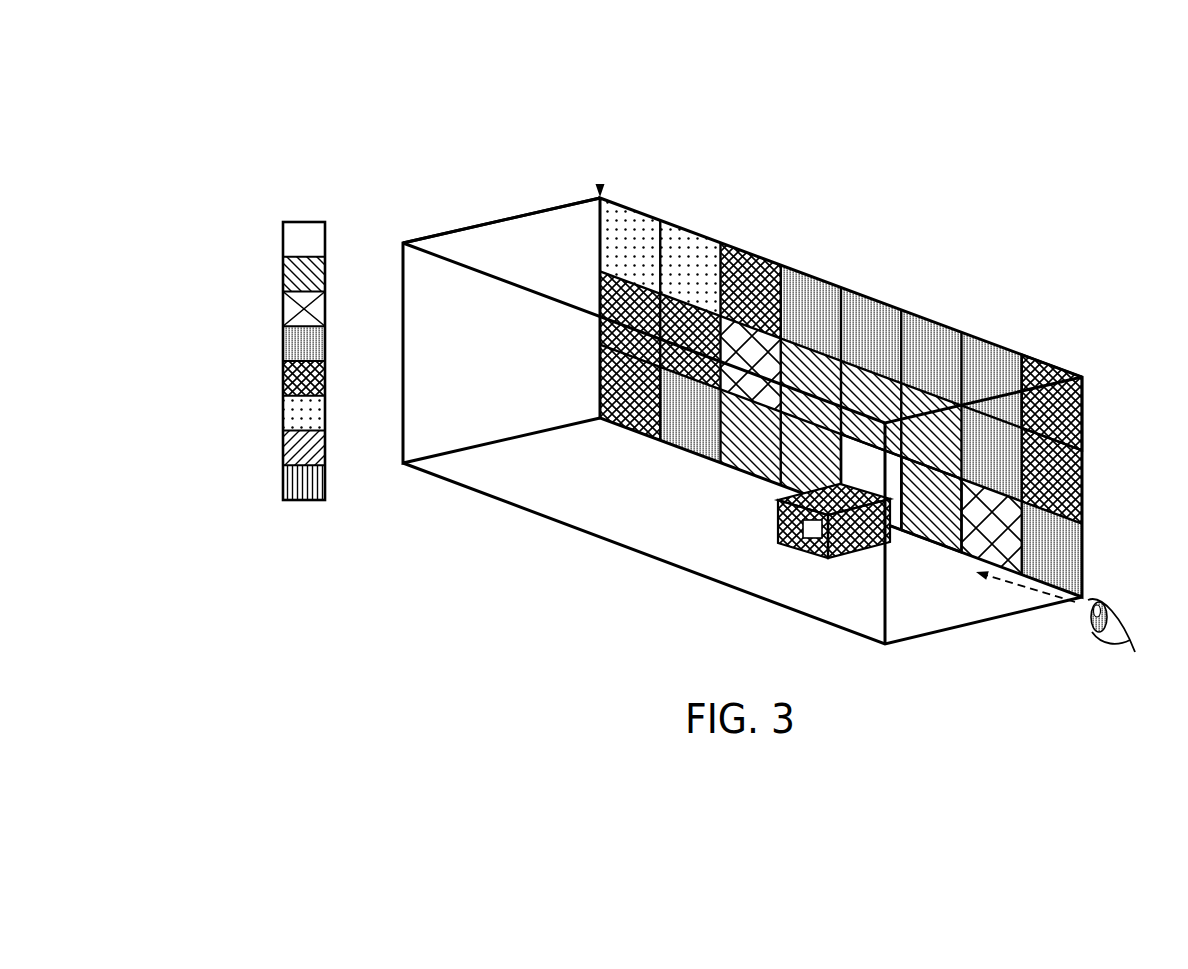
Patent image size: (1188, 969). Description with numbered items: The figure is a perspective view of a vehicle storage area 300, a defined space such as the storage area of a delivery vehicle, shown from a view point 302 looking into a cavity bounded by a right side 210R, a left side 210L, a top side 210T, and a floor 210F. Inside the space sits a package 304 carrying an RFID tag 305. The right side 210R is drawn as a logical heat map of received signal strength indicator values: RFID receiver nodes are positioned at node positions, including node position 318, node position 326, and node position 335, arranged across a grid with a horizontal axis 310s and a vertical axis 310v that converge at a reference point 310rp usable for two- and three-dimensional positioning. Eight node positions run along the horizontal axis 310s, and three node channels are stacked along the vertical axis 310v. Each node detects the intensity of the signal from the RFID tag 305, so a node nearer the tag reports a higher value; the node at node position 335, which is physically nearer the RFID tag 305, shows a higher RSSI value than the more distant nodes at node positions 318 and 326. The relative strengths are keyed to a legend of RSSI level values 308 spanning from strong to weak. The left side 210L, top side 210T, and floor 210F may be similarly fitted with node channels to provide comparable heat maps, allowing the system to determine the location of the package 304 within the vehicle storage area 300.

The vehicle storage area 300 is at (406, 212).
The view point 302 is at (1073, 607).
The package 304 is at (778, 516).
The RFID tag 305 is at (823, 545).
The RSSI level values 308 is at (303, 188).
The reference point 310rp is at (600, 188).
The horizontal axis 310s is at (640, 187).
The vertical axis 310v is at (580, 238).
The node position 318 is at (1082, 420).
The node position 326 is at (915, 452).
The node position 335 is at (893, 513).
The top side 210T is at (536, 219).
The left side 210L is at (511, 427).
The right side 210R is at (893, 300).
The floor 210F is at (610, 503).